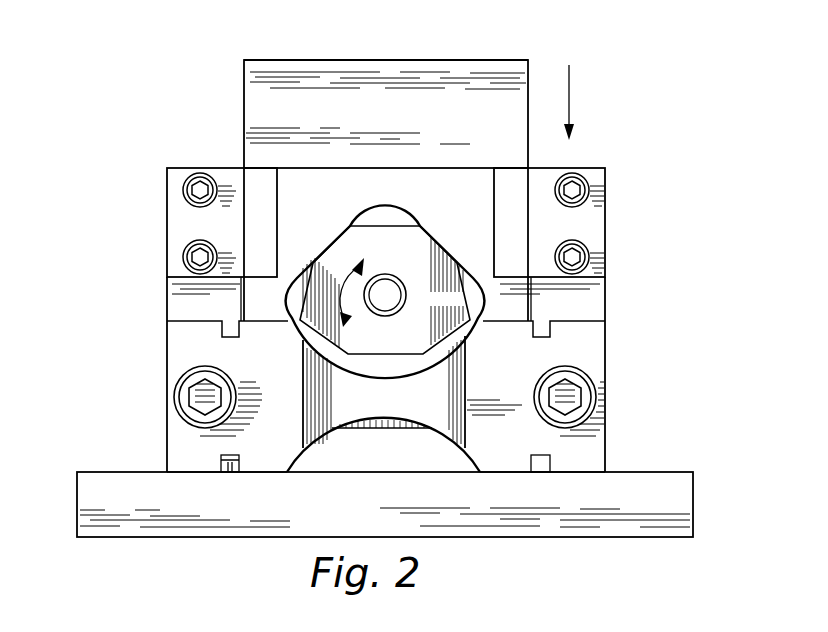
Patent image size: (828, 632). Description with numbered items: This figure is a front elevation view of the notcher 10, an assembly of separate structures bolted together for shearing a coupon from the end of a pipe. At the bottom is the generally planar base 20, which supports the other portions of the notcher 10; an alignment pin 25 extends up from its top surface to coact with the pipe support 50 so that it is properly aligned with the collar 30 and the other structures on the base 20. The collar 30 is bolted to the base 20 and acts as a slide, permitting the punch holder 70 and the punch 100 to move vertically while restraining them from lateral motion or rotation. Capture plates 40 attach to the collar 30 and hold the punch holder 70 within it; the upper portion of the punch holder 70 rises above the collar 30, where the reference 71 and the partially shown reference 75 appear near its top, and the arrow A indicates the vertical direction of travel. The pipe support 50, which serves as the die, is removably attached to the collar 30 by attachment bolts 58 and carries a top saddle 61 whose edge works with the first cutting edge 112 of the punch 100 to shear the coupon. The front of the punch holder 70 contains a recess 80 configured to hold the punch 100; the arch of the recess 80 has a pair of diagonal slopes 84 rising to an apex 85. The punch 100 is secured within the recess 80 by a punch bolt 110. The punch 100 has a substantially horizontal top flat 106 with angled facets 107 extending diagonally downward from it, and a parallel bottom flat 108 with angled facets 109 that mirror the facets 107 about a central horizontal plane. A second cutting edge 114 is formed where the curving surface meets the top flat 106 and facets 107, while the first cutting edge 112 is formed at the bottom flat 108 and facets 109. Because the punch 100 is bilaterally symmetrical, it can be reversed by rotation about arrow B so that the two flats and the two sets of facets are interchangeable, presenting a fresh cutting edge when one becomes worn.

The notcher 10 is at (97, 84).
The base 20 is at (694, 500).
The alignment pin 25 is at (229, 474).
The collar 30 is at (606, 300).
The capture plates 40 is at (183, 228).
The pipe support 50 is at (606, 458).
The attachment bolts 58 is at (586, 370).
The top saddle 61 is at (297, 338).
The punch holder 70 is at (244, 60).
The top surface 71 is at (330, 60).
The upper member 75 is at (479, 9).
The recess 80 is at (378, 177).
The diagonal slopes 84 is at (336, 248).
The apex 85 is at (381, 205).
The punch 100 is at (421, 267).
The top flat 106 is at (399, 224).
The angled facets 107 is at (312, 258).
The bottom flat 108 is at (390, 357).
The angled facets 109 is at (463, 313).
The punch bolt 110 is at (394, 292).
The first cutting edge 112 is at (447, 352).
The second cutting edge 114 is at (343, 227).
The direction arrow A is at (571, 104).
The arrow B is at (348, 289).